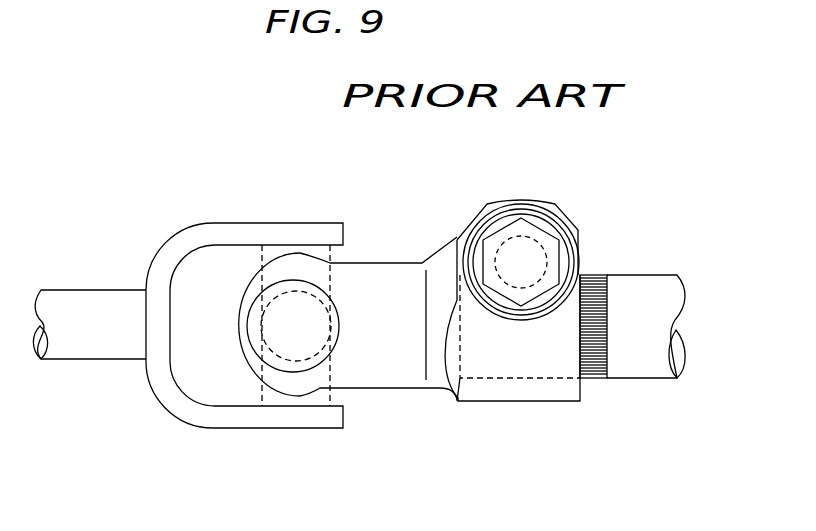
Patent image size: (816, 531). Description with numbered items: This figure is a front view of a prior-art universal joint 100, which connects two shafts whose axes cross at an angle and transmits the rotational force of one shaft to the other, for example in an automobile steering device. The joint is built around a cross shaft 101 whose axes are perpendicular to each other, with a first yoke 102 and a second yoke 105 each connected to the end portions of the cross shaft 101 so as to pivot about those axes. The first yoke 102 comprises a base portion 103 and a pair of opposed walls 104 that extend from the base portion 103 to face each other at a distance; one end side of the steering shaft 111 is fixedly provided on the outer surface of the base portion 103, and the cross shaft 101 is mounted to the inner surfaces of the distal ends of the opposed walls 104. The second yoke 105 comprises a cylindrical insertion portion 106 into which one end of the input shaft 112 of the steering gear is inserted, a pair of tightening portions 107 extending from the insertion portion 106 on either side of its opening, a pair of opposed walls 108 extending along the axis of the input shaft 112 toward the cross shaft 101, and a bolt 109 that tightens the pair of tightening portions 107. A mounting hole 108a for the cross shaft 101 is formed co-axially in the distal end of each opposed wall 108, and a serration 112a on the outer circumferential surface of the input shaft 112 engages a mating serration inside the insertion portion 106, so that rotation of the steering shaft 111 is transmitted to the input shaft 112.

The universal joint 100 is at (186, 125).
The cross shaft 101 is at (270, 397).
The first yoke 102 is at (180, 337).
The base portion 103 is at (150, 281).
The opposed walls 104 is at (297, 226).
The second yoke 105 is at (418, 328).
The insertion portion 106 is at (510, 360).
The tightening portions 107 is at (545, 200).
The opposed walls 108 is at (367, 360).
The mounting hole 108a is at (330, 318).
The bolt 109 is at (500, 240).
The steering shaft 111 is at (90, 297).
The input shaft 112 is at (642, 280).
The serration 112a is at (592, 380).